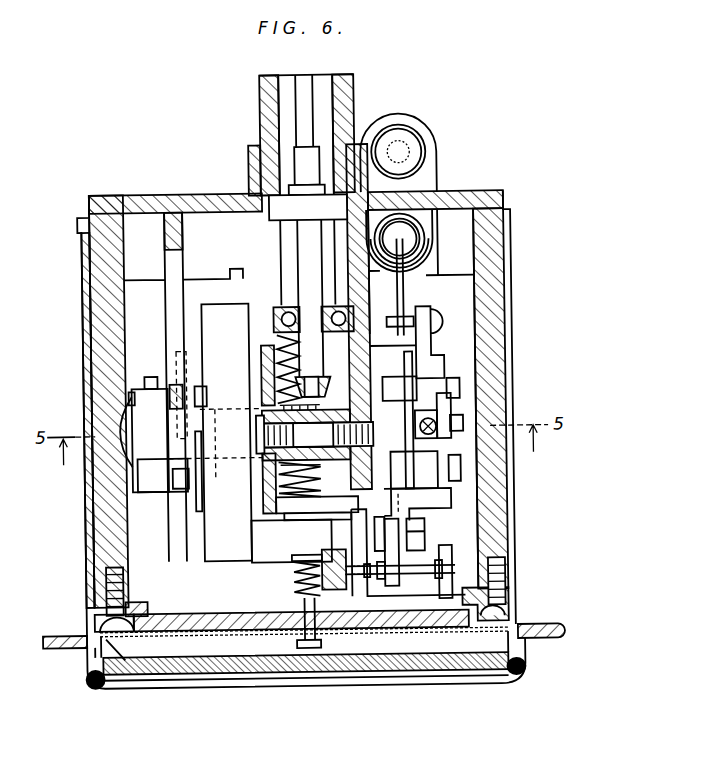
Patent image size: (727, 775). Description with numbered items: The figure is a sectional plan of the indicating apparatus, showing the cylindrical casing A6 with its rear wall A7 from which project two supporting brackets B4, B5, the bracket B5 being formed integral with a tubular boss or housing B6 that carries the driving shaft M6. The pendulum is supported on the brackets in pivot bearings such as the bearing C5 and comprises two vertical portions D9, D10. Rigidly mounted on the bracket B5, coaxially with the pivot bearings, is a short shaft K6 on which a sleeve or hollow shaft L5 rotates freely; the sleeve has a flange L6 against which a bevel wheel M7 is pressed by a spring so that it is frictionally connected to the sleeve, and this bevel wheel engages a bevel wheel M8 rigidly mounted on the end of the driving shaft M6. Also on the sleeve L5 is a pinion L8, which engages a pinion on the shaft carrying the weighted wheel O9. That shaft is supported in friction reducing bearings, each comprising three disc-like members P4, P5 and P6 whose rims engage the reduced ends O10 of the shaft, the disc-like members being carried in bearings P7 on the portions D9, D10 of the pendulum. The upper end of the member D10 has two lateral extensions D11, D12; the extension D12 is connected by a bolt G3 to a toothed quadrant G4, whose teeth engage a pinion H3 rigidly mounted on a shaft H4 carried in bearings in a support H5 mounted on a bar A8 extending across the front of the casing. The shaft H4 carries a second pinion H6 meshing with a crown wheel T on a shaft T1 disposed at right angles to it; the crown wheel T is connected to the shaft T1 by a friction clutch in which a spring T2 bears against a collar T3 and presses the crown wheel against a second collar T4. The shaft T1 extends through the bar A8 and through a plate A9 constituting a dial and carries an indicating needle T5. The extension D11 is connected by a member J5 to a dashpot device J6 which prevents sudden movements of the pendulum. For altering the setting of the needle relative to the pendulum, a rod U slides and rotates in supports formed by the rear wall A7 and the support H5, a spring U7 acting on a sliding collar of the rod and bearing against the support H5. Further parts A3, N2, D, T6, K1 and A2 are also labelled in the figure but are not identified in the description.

The guide column A3 is at (358, 128).
The driving shaft M6 is at (380, 183).
The tubular boss or housing B6 is at (355, 256).
The dashpot device J6 is at (420, 255).
The member J5 is at (420, 290).
The rear wall A7 is at (186, 200).
The bevel wheel M8 is at (262, 245).
The supporting bracket B4 is at (182, 270).
The cylindrical casing A6 is at (92, 317).
The lateral extension D11 is at (440, 322).
The supporting bracket B5 is at (400, 362).
The bevel wheel M7 is at (392, 395).
The flange L6 is at (442, 395).
The disc-like member P4 is at (200, 375).
The spring U7 is at (275, 348).
The rod U is at (262, 373).
The hub shaft N2 is at (267, 400).
The reduced ends O10 is at (173, 433).
The vertical portion D9 is at (120, 422).
The bearing C5 is at (180, 435).
The vertical portion D10 is at (480, 412).
The disc-like member P6 is at (452, 430).
The disc-like member P5 is at (232, 480).
The bearings P7 is at (205, 470).
The bar D is at (130, 555).
The sleeve or hollow shaft L5 is at (104, 582).
The pinion L8 is at (215, 490).
The plate T6 is at (232, 540).
The second collar T4 is at (290, 560).
The bracket K1 is at (440, 505).
The short shaft K6 is at (470, 480).
The bolt G3 is at (408, 524).
The lateral extension D12 is at (480, 492).
The toothed quadrant G4 is at (470, 530).
The pinion H3 is at (500, 582).
The shaft H4 is at (518, 628).
The plate A9 is at (108, 686).
The weighted wheel O9 is at (260, 560).
The crown wheel T is at (280, 560).
The spring T2 is at (300, 565).
The collar T3 is at (318, 578).
The bar A8 is at (310, 640).
The shaft T1 is at (330, 600).
The indicating needle T5 is at (323, 650).
The housing A2 is at (390, 600).
The second pinion H6 is at (420, 610).
The support H5 is at (505, 660).